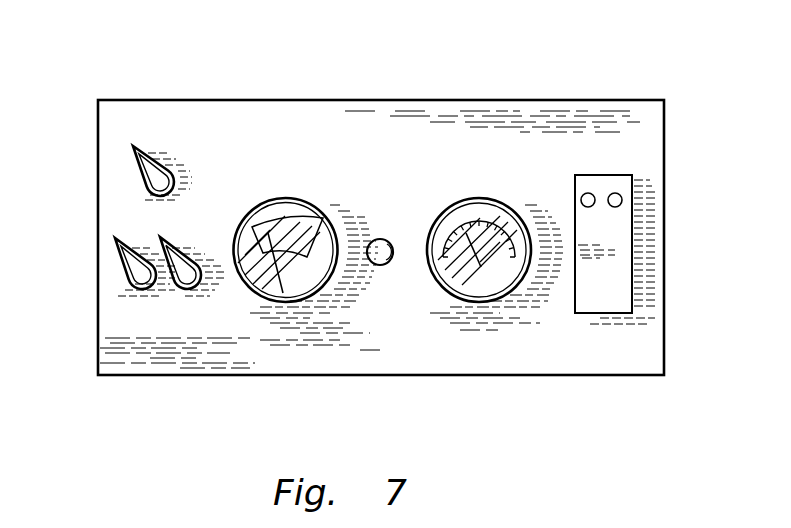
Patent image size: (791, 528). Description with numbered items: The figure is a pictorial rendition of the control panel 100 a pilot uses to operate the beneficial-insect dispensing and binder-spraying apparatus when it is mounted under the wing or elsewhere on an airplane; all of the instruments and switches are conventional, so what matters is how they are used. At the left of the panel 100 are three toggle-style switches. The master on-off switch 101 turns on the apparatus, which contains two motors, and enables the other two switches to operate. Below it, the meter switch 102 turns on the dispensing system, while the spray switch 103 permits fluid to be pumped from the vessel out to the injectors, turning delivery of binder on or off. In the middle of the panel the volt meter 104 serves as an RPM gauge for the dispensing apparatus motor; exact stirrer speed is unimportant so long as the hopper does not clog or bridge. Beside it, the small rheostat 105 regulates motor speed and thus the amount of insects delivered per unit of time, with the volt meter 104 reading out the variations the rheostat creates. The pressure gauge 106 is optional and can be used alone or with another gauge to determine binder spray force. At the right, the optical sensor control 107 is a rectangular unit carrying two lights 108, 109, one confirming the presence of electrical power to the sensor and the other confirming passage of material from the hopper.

The control panel 100 is at (520, 78).
The master on-off switch 101 is at (147, 188).
The meter switch 102 is at (129, 283).
The spray switch 103 is at (181, 289).
The volt meter 104 is at (268, 302).
The rheostat 105 is at (380, 265).
The pressure gauge 106 is at (475, 303).
The optical sensor control 107 is at (620, 282).
The hole 108 is at (588, 193).
The hole 109 is at (622, 203).